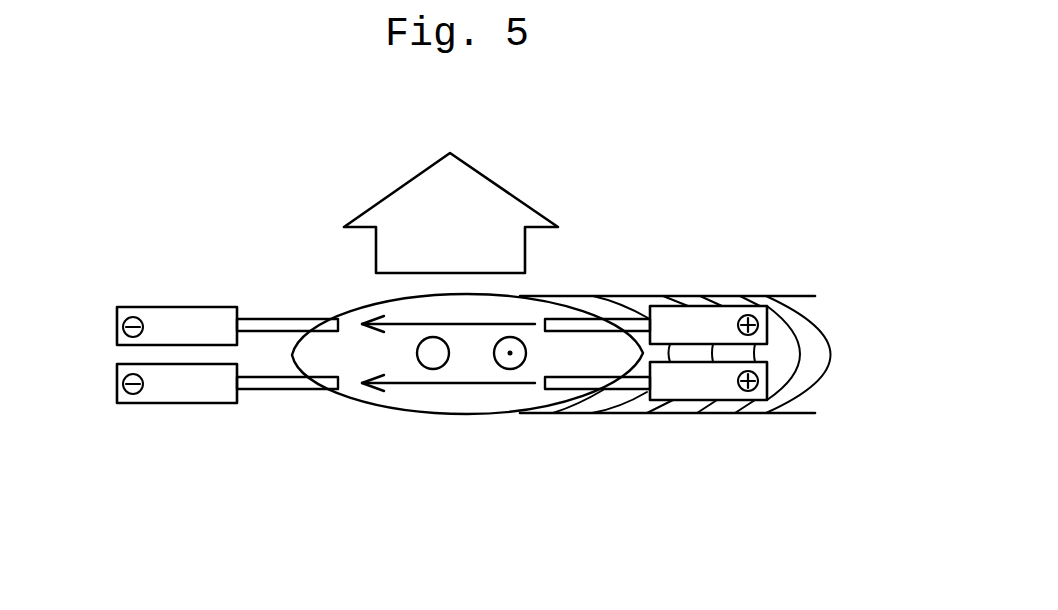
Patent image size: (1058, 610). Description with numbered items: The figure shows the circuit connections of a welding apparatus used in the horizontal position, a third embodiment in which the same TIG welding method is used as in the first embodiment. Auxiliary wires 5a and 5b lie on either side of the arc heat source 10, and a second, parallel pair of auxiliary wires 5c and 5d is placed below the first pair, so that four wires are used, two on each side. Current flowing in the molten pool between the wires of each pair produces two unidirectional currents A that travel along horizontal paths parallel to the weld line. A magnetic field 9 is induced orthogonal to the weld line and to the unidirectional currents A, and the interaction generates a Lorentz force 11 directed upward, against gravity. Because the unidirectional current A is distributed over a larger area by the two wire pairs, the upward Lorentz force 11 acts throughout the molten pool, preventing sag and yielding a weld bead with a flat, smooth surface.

The auxiliary wire 5a is at (247, 318).
The auxiliary wire 5b is at (612, 325).
The auxiliary wire 5c is at (257, 392).
The auxiliary wire 5d is at (612, 383).
The magnetic field 9 is at (510, 369).
The arc heat source 10 is at (433, 369).
The Lorentz force 11 is at (393, 118).
The unidirectional current A is at (400, 325).